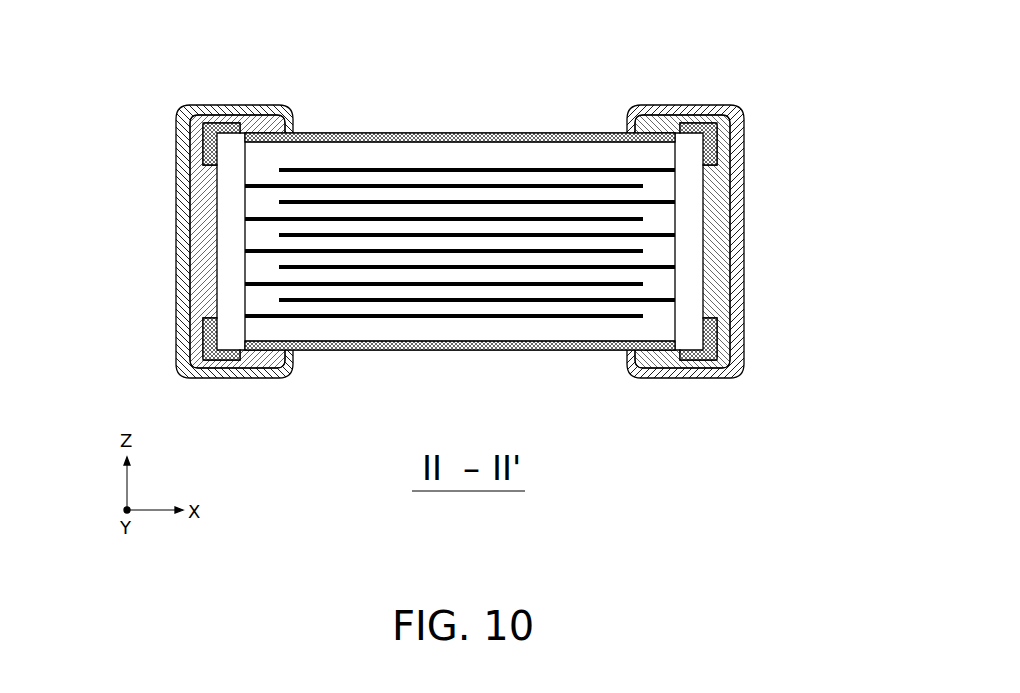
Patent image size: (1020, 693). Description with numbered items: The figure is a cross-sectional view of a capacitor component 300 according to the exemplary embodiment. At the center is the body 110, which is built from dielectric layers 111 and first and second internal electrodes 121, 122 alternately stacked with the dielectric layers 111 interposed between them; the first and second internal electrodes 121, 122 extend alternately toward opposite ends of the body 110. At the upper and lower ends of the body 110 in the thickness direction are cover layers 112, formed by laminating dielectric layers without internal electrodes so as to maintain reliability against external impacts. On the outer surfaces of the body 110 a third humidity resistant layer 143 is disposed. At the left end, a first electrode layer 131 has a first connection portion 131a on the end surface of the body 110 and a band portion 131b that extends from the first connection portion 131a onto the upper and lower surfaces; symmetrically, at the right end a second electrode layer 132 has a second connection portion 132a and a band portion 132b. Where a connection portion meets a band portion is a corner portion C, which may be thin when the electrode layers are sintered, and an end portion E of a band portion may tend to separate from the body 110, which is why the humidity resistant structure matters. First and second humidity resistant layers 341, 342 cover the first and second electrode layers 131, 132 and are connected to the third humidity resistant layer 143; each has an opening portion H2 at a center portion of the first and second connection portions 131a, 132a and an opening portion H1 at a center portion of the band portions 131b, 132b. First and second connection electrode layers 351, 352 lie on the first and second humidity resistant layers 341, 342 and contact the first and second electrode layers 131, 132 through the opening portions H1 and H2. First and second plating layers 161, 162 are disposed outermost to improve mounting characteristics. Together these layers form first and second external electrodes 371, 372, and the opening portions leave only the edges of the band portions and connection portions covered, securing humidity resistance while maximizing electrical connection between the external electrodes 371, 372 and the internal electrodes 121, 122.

The capacitor component 300 is at (482, 28).
The body 110 is at (567, 138).
The dielectric layer 111 is at (353, 168).
The cover layer 112 is at (482, 138).
The first internal electrode 121 is at (402, 183).
The second internal electrode 122 is at (443, 162).
The third humidity resistant layer 143 is at (535, 138).
The first electrode layer 131 is at (114, 330).
The first connection portion 131a is at (230, 328).
The band portion 131b is at (205, 366).
The second electrode layer 132 is at (808, 313).
The second connection portion 132a is at (690, 328).
The band portion 132b is at (715, 366).
The first plating layer 161 is at (183, 283).
The second plating layer 162 is at (740, 275).
The first humidity resistant layer 341 is at (178, 176).
The second humidity resistant layer 342 is at (742, 176).
The first connection electrode layer 351 is at (202, 199).
The second connection electrode layer 352 is at (718, 199).
The first external electrode 371 is at (66, 380).
The second external electrode 372 is at (858, 170).
The opening portion H1 is at (252, 116).
The opening portion H2 is at (205, 253).
The end portion E is at (641, 140).
The corner portion C is at (762, 140).